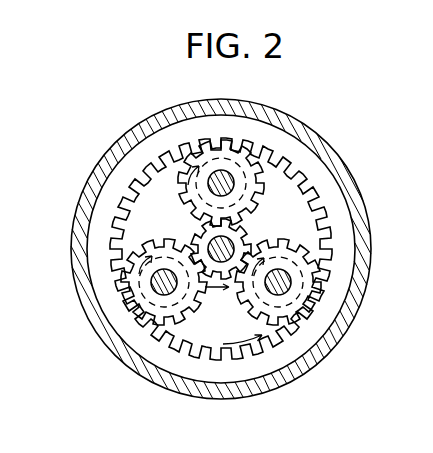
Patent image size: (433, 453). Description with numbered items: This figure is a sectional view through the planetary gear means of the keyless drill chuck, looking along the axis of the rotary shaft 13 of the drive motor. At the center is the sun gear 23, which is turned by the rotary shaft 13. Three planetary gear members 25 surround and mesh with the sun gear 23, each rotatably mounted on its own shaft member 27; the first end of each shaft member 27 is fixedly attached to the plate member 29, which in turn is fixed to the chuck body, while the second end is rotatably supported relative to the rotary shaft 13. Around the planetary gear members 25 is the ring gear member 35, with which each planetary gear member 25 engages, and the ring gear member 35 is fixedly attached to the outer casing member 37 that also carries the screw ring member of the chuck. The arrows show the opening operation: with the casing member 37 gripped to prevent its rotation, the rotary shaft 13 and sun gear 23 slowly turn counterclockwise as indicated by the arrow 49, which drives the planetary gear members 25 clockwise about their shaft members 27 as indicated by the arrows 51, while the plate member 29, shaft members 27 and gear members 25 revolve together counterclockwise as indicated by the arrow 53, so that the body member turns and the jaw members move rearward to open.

The rotary shaft 13 is at (214, 195).
The sun gear 23 is at (250, 243).
The planetary gear member 25 is at (253, 178).
The shaft member 27 is at (222, 170).
The plate member 29 is at (244, 232).
The ring gear member 35 is at (145, 155).
The casing member 37 is at (287, 118).
The arrow 49 is at (216, 292).
The arrows 51 is at (177, 180).
The arrow 53 is at (248, 343).